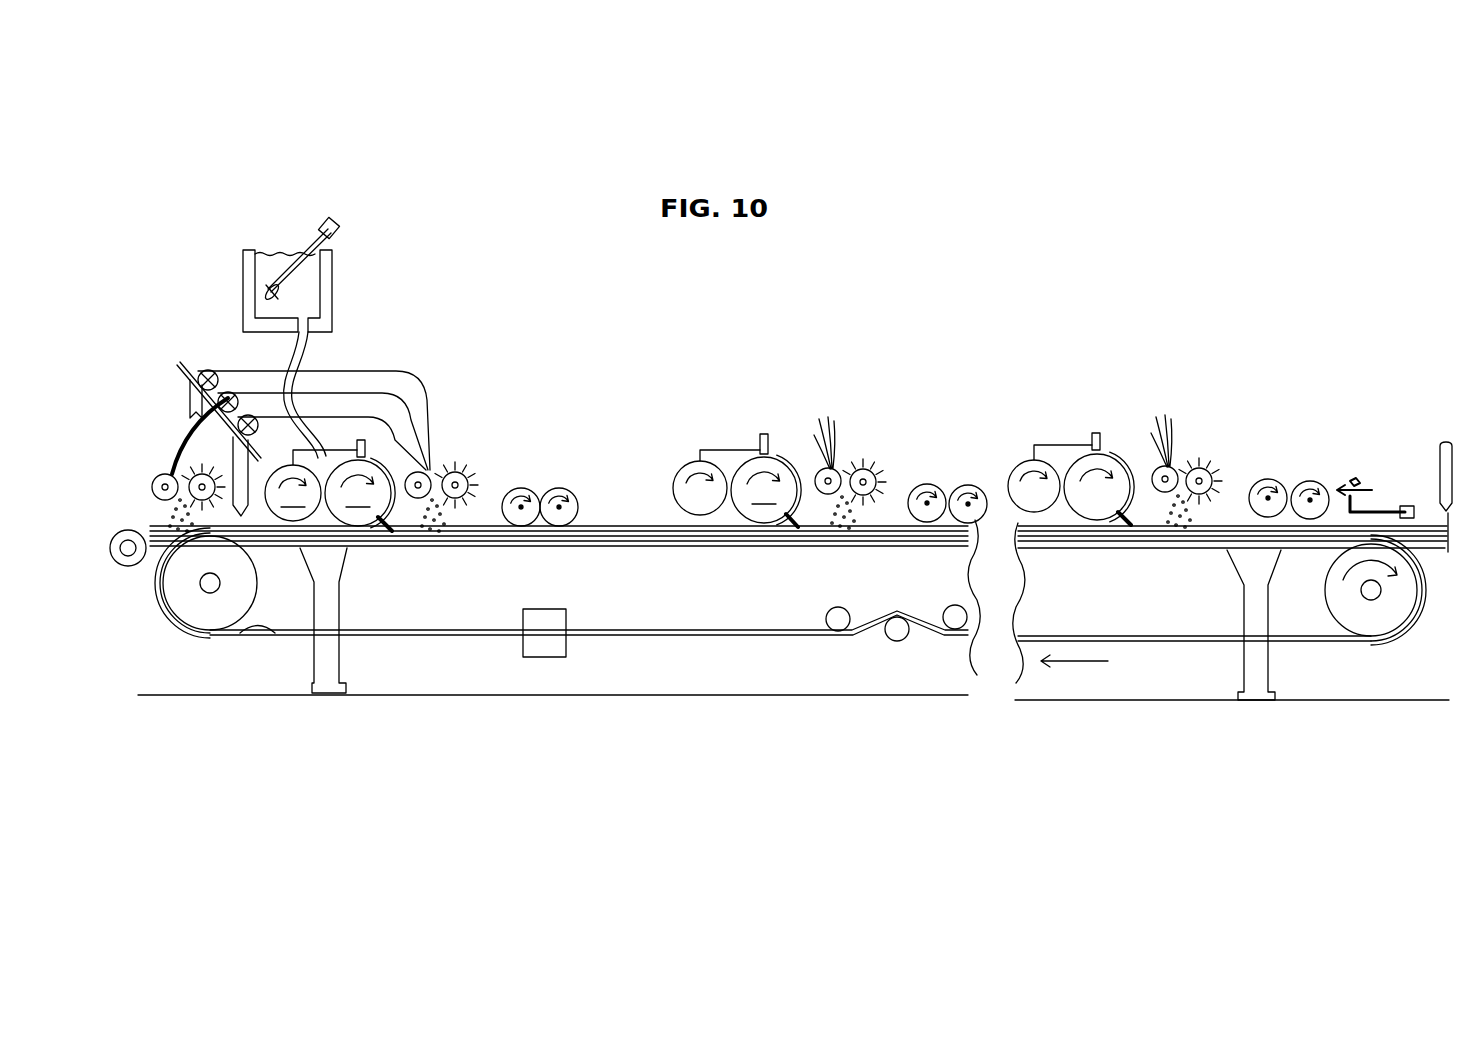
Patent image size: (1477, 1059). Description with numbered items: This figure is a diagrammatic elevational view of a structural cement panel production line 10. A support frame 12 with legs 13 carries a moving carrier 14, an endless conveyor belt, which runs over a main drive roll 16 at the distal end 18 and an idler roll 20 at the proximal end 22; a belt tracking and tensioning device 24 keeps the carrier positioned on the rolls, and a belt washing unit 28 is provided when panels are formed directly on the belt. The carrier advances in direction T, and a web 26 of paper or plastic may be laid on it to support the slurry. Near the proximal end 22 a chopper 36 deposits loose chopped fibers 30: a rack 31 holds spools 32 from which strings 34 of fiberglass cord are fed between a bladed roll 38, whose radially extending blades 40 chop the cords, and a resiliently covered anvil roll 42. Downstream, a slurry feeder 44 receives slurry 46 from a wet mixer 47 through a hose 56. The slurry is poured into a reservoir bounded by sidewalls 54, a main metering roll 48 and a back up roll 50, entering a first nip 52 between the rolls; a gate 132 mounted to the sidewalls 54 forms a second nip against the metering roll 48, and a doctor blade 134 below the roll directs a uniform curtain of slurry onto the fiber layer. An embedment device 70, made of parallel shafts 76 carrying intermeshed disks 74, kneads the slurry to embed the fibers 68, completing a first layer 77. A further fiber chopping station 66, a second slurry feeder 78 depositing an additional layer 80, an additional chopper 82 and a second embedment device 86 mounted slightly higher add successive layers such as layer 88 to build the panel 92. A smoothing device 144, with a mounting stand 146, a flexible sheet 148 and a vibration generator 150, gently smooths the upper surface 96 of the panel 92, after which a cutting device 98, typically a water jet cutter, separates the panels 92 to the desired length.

The production line 10 is at (871, 217).
The support frame 12 is at (723, 548).
The legs 13 is at (333, 593).
The moving carrier 14 is at (237, 630).
The main drive roll 16 is at (1347, 610).
The distal end 18 is at (1430, 545).
The idler roll 20 is at (183, 597).
The proximal end 22 is at (178, 540).
The belt tracking and/or tensioning device 24 is at (927, 484).
The web 26 is at (148, 533).
The belt washing unit 28 is at (542, 657).
The chopped fibers 30 is at (150, 492).
The rack 31 is at (180, 362).
The spools 32 is at (205, 370).
The string of fiber 34 is at (372, 418).
The chopper 36 is at (188, 440).
The bladed roll 38 is at (473, 478).
The blades 40 is at (452, 462).
The anvil roll 42 is at (168, 468).
The slurry feeder 44 is at (408, 403).
The slurry 46 is at (309, 269).
The wet mixer 47 is at (247, 247).
The main metering roll 48 is at (729, 490).
The back up roll 50 is at (686, 494).
The first nip 52 is at (360, 429).
The sidewalls 54 is at (307, 448).
The hose 56 is at (307, 336).
The fiber chopping station 66 is at (450, 435).
The fibers 68 is at (410, 513).
The embedment device 70 is at (554, 443).
The disks 74 is at (568, 524).
The shafts 76 is at (521, 527).
The first layer 77 is at (602, 525).
The second slurry feeder 78 is at (735, 417).
The additional layer 80 is at (912, 592).
The additional chopper 82 is at (866, 417).
The second embedment device 86 is at (956, 459).
The layer 88 is at (1143, 520).
The panel 92 is at (1433, 557).
The upper surface 96 is at (1440, 455).
The cutting device 98 is at (1422, 522).
The gate 132 is at (365, 440).
The doctor blade 134 is at (385, 530).
The smoothing device 144 is at (1388, 472).
The mounting stand 146 is at (1342, 482).
The flexible sheet 148 is at (1377, 493).
The vibration generator 150 is at (1400, 507).
The direction of travel T is at (1051, 413).